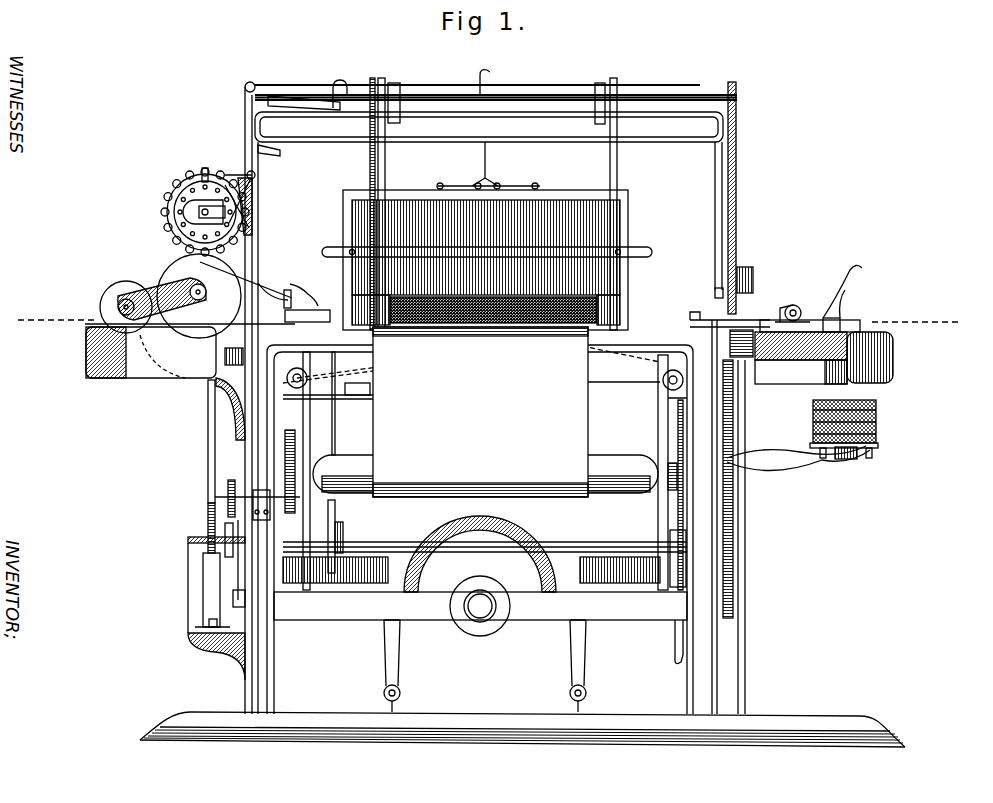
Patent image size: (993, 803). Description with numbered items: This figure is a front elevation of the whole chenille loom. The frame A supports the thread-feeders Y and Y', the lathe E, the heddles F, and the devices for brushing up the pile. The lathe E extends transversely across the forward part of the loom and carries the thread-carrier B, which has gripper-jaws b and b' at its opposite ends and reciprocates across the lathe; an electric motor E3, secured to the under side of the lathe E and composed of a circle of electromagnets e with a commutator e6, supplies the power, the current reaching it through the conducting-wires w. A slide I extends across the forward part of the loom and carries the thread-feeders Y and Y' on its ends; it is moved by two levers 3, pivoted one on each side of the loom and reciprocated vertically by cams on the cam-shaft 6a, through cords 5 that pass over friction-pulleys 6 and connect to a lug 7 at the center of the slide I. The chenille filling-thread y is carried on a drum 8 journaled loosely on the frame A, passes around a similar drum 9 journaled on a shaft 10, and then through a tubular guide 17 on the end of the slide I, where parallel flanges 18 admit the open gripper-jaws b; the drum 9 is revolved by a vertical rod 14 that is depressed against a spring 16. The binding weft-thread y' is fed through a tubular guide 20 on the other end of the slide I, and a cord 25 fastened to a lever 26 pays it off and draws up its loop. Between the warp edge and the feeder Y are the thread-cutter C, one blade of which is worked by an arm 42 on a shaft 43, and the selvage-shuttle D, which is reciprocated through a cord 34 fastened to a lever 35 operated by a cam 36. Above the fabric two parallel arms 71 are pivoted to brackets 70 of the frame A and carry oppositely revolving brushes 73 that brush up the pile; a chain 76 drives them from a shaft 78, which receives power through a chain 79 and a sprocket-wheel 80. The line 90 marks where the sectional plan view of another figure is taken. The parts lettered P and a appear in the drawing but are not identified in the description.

The levers 3 is at (285, 594).
The heddles F is at (556, 194).
The chain 76 is at (369, 160).
The parallel arms 71 is at (386, 170).
The brackets 70 is at (388, 90).
The shaft 78 is at (491, 86).
The sprocket-wheel 80 is at (738, 91).
The chain 79 is at (738, 198).
The band or cord 25 is at (736, 406).
The drum 9 is at (185, 262).
The drum 8 is at (115, 287).
The shaft 10 is at (165, 286).
The thread-feeder Y is at (284, 281).
The chenille filling-thread y is at (246, 275).
The selvage-shuttle D is at (309, 291).
The tubular guide 17 is at (284, 300).
The parallel flanges 18 is at (285, 316).
The vertical rod 14 is at (208, 442).
The spring 16 is at (208, 521).
The friction-pulleys 6 is at (308, 380).
The cords 5 is at (328, 416).
The band or cord 34 is at (336, 438).
The shaft 43 is at (345, 399).
The arm 42 is at (372, 388).
The brushes 73 is at (471, 357).
The lug 7 is at (556, 348).
The lever 35 is at (336, 514).
The cam 36 is at (344, 534).
The roller P is at (608, 494).
The thread-cutter C is at (380, 334).
The frame A is at (605, 432).
The cam-shaft 6a is at (603, 546).
The lever 26 is at (667, 480).
The thread-carrier B is at (698, 313).
The gripper-jaw b is at (684, 307).
The slide I is at (845, 333).
The lathe E is at (894, 362).
The electric motor E3 is at (878, 420).
The electromagnets e is at (872, 444).
The commutator e6 is at (846, 460).
The conducting-wires w is at (790, 465).
The take-up mechanism Y' is at (835, 297).
The binding weft-thread y' is at (870, 276).
The tubular guide 20 is at (846, 300).
The gripper-jaw b' is at (785, 302).
The comb a is at (628, 272).
The section line 90 is at (493, 321).